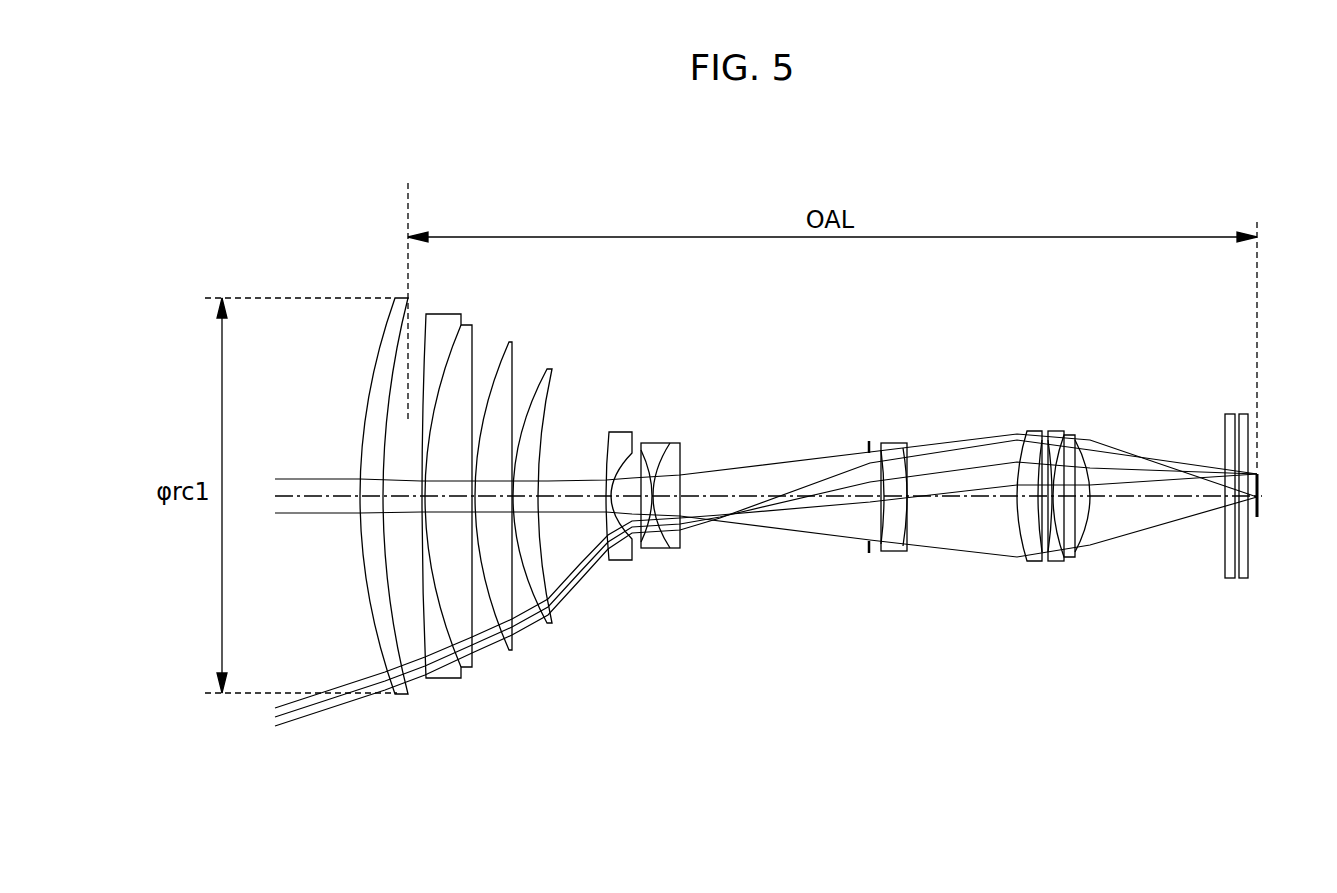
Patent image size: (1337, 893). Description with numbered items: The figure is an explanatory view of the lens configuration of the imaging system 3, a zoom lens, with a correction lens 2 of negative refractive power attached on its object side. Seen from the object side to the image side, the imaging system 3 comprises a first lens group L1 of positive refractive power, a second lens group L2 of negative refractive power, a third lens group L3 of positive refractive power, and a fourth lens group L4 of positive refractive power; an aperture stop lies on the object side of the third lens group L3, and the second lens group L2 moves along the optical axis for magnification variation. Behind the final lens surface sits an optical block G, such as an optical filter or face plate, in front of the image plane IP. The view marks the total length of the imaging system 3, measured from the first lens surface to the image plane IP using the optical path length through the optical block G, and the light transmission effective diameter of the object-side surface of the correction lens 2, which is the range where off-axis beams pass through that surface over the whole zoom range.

The correction lens 2 is at (397, 694).
The imaging system 3 is at (1265, 738).
The first lens group L1 is at (493, 521).
The second lens group L2 is at (646, 519).
The third lens group L3 is at (888, 525).
The fourth lens group L4 is at (1053, 519).
The optical block G is at (1235, 518).
The image plane IP is at (1257, 487).